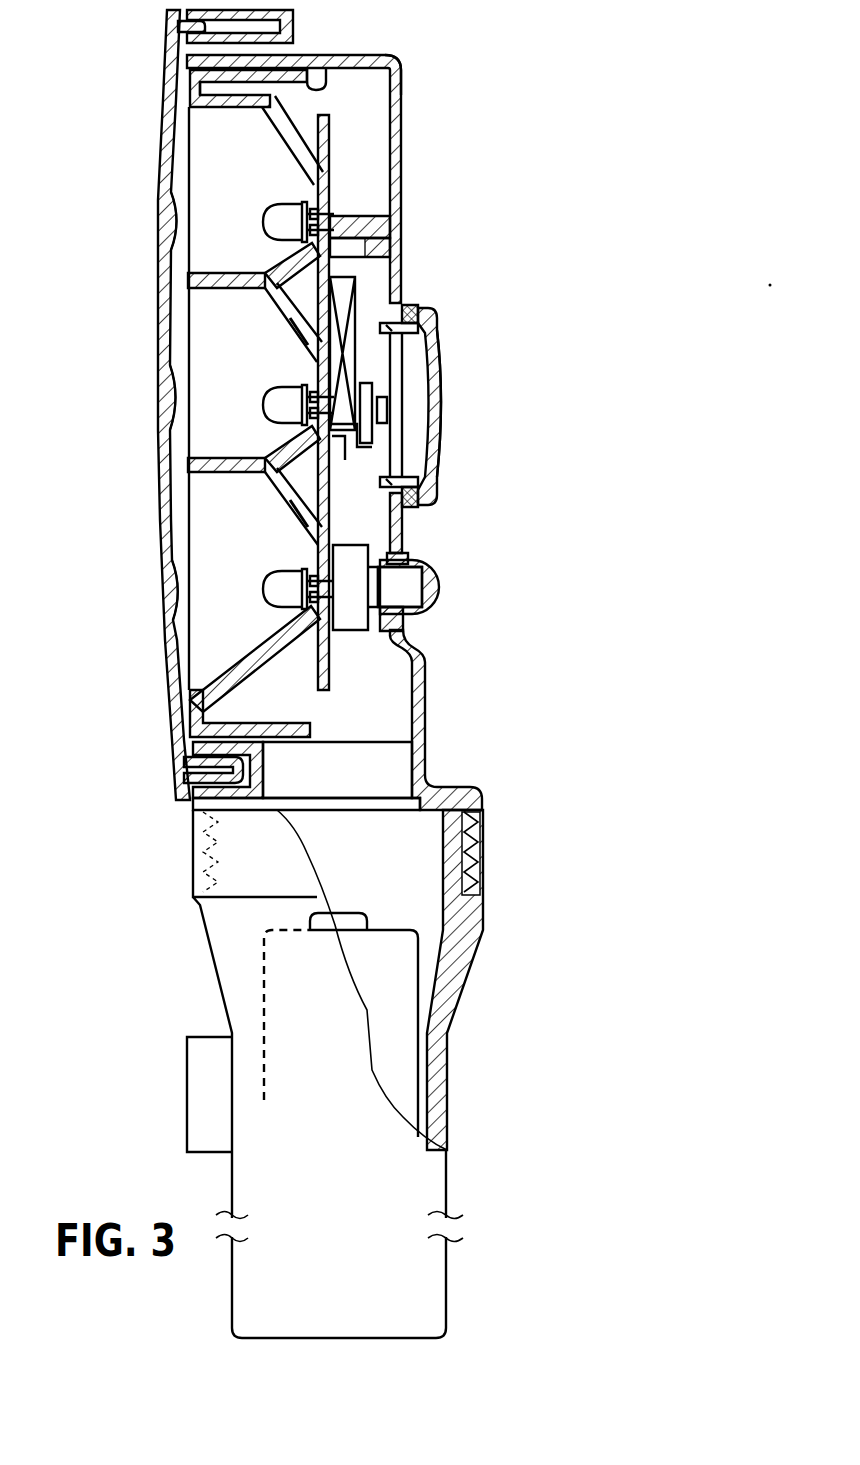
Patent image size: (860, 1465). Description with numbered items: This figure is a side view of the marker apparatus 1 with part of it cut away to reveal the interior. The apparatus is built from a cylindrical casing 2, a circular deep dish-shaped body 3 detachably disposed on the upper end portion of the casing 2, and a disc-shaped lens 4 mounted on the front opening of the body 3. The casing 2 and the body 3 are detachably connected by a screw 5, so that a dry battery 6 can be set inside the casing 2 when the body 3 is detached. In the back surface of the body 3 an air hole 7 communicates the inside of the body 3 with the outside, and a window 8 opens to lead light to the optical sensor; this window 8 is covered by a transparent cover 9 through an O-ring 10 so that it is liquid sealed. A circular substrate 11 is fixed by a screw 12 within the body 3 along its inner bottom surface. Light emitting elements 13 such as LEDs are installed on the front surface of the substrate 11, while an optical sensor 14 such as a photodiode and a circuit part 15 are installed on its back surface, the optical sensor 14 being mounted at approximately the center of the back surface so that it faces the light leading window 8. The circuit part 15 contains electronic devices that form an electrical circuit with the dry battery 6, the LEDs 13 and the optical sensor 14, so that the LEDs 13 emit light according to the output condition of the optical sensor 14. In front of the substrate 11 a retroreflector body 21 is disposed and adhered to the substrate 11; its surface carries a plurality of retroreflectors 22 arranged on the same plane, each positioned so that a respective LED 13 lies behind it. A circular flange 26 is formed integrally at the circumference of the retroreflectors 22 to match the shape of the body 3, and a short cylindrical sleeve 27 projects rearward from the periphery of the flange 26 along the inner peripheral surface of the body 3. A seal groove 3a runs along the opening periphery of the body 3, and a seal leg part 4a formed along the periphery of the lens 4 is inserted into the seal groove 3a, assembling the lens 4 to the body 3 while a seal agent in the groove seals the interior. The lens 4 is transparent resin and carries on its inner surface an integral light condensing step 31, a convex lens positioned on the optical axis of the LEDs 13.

The marker apparatus 1 is at (413, 147).
The casing 2 is at (420, 1188).
The body 3 is at (397, 247).
The seal groove 3a is at (293, 117).
The lens 4 is at (161, 148).
The seal leg part 4a is at (178, 30).
The screw 5 is at (475, 860).
The dry battery 6 is at (400, 1025).
The air hole 7 is at (407, 583).
The window 8 is at (413, 397).
The transparent cover 9 is at (441, 432).
The O-ring 10 is at (425, 320).
The substrate 11 is at (335, 685).
The screw 12 is at (315, 490).
The light emitting elements 13 is at (278, 405).
The optical sensor 14 is at (372, 433).
The circuit part 15 is at (343, 290).
The retroreflector body 21 is at (400, 78).
The retroreflectors 22 is at (250, 162).
The flange 26 is at (190, 100).
The sleeve 27 is at (315, 62).
The light condensing step 31 is at (172, 226).